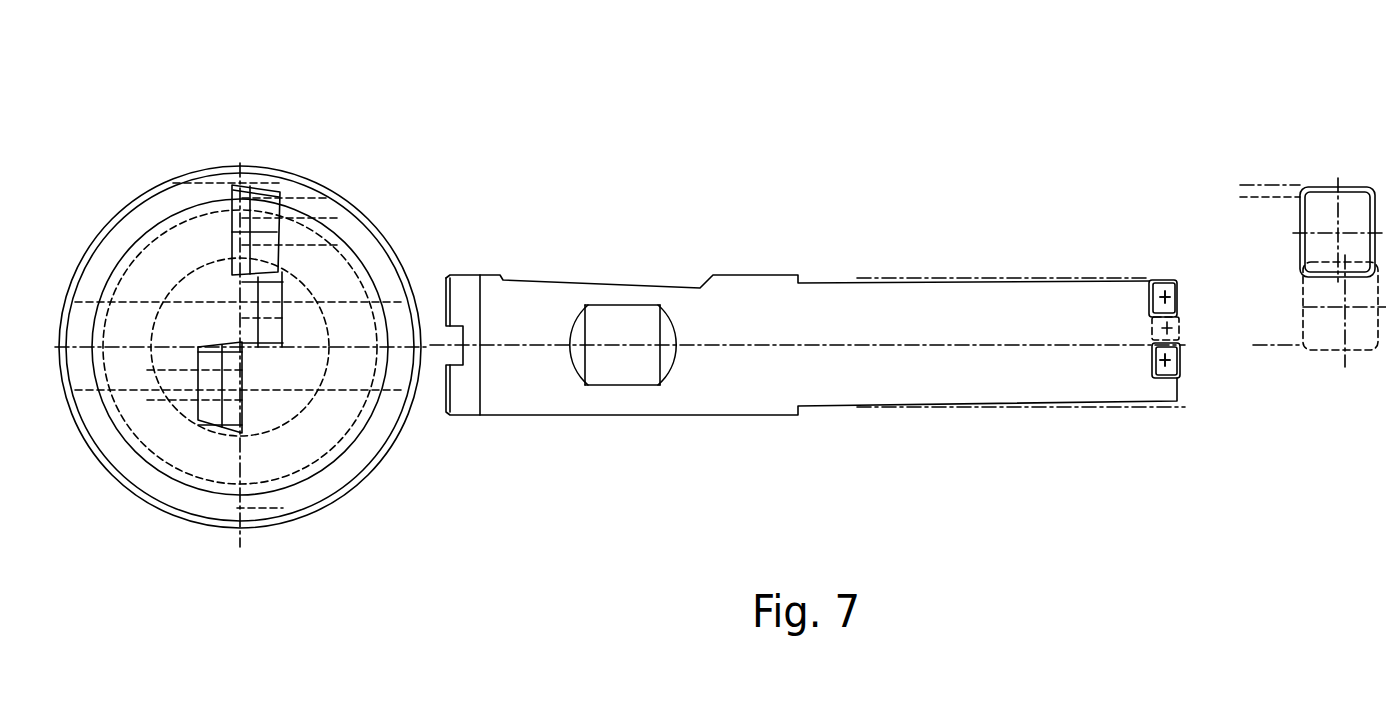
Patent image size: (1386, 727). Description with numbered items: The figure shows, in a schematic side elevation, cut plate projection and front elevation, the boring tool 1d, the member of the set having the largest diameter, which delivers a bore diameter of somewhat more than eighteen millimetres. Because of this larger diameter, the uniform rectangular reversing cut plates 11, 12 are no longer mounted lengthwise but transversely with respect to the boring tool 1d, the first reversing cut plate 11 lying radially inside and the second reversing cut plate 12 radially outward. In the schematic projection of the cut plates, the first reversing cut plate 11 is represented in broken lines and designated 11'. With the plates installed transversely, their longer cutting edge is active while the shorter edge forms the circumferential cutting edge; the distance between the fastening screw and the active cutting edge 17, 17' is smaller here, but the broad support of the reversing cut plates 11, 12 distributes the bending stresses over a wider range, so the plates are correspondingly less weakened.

The boring tool 1d is at (670, 200).
The second reversing cut plate 12 is at (270, 202).
The first reversing cut plate 11 is at (792, 437).
The first reversing cut plate (schematic projection) 11' is at (819, 341).
The active cutting edge 17 is at (1213, 382).
The active cutting edge 17' is at (1213, 259).